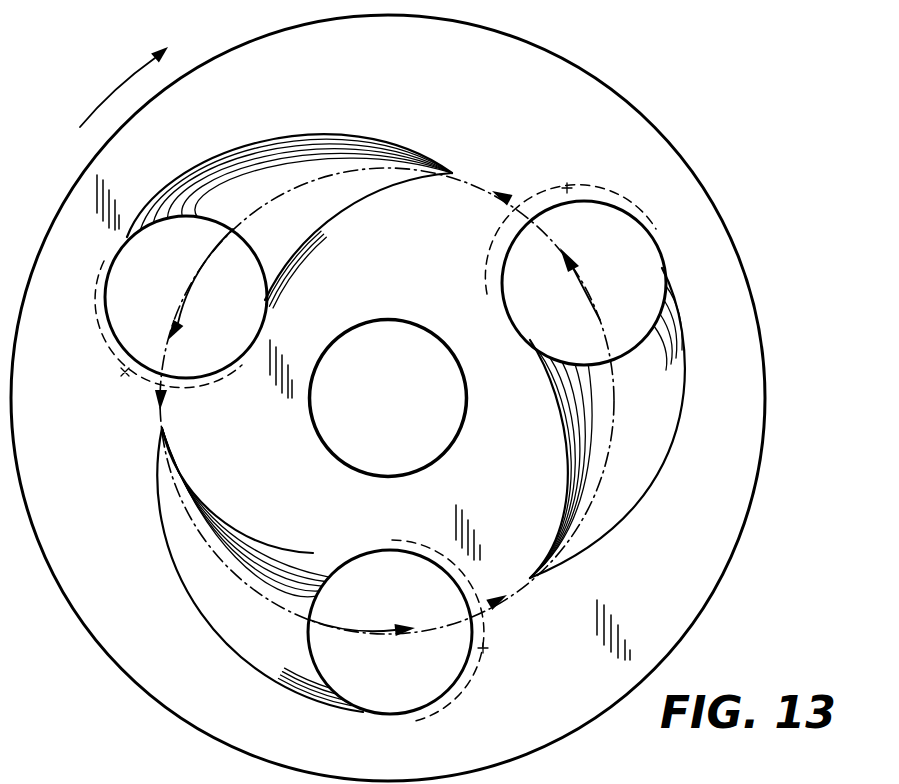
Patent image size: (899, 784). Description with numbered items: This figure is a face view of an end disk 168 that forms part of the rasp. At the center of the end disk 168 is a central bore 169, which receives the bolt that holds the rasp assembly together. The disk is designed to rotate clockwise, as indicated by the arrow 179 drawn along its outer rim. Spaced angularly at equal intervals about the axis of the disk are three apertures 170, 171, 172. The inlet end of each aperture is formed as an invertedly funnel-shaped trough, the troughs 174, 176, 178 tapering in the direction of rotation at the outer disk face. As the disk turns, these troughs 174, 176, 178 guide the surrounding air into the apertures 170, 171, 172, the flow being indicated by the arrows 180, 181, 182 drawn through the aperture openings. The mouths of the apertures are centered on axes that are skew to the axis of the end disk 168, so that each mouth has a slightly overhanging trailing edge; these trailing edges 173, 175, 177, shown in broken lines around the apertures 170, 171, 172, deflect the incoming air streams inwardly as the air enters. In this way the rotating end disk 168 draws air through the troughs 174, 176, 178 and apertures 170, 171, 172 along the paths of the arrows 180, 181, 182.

The end disk 168 is at (513, 75).
The central bore 169 is at (437, 338).
The aperture 170 is at (198, 214).
The aperture 171 is at (550, 378).
The aperture 172 is at (343, 523).
The trailing edge 173 is at (120, 372).
The trough 174 is at (295, 162).
The trailing edge 175 is at (610, 160).
The trough 176 is at (648, 428).
The trailing edge 177 is at (550, 640).
The trough 178 is at (207, 588).
The arrow 179 is at (118, 87).
The arrow 180 is at (178, 298).
The arrow 181 is at (593, 297).
The arrow 182 is at (384, 633).